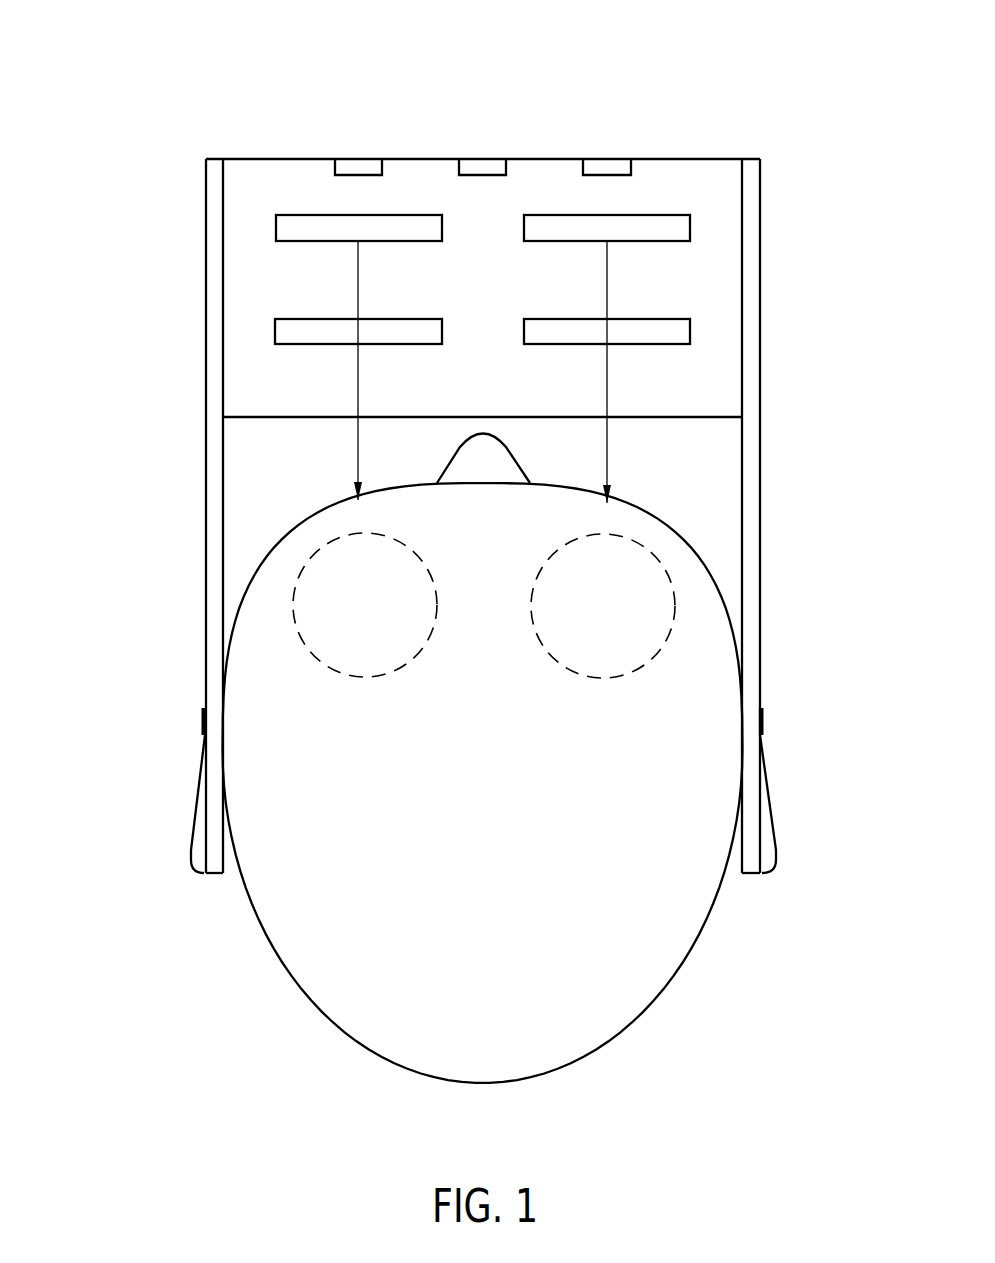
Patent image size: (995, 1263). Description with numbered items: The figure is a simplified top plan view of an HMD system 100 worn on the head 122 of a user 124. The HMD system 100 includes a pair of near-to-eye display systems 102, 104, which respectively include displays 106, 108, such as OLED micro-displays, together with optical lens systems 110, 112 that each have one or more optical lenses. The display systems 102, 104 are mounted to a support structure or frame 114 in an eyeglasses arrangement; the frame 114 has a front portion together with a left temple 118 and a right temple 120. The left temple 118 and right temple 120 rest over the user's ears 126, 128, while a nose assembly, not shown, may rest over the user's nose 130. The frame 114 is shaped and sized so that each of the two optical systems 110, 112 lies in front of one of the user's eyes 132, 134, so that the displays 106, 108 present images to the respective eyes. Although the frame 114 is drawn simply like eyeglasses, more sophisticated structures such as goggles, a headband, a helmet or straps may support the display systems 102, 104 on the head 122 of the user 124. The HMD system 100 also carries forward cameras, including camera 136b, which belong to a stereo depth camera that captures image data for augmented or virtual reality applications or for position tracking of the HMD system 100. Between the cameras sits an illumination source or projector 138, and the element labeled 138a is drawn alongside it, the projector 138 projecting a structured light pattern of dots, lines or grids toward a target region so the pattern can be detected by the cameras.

The HMD system 100 is at (137, 55).
The near-to-eye display system 102 is at (277, 258).
The near-to-eye display system 104 is at (690, 258).
The display 106 is at (325, 215).
The display 108 is at (645, 215).
The optical lens system 110 is at (275, 333).
The optical lens system 112 is at (690, 333).
The frame 114 is at (206, 160).
The left temple 118 is at (206, 570).
The right temple 120 is at (760, 562).
The head 122 is at (608, 1047).
The user 124 is at (310, 1037).
The ear 126 is at (196, 842).
The ear 128 is at (776, 840).
The nose 130 is at (520, 462).
The eye 132 is at (305, 648).
The eye 134 is at (662, 647).
The forward camera 136b is at (607, 168).
The projector 138 is at (483, 168).
The sensor 138a is at (358, 168).